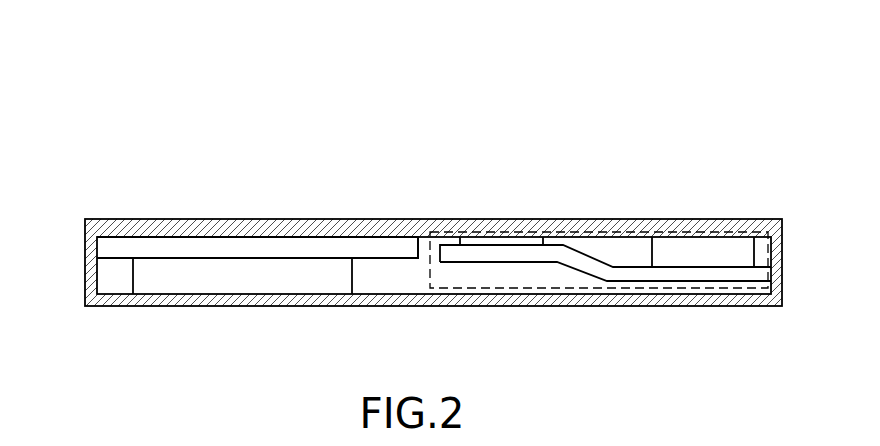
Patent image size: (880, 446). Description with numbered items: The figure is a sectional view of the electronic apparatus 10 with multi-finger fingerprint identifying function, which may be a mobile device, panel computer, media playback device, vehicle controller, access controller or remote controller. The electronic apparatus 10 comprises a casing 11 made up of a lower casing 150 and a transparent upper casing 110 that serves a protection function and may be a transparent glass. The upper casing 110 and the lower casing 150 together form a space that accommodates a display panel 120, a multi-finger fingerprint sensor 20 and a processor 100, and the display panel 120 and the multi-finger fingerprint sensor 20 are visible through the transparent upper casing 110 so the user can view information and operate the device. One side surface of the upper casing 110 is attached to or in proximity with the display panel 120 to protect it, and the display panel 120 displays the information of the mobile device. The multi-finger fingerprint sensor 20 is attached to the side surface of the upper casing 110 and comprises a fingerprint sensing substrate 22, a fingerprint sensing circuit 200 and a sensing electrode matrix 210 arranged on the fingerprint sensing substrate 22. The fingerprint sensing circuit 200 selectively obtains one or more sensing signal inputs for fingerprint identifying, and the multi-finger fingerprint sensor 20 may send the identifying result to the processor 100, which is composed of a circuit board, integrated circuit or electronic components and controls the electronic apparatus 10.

The electronic apparatus 10 is at (433, 80).
The casing 11 is at (347, 150).
The processor 100 is at (138, 279).
The upper casing 110 is at (352, 236).
The display panel 120 is at (110, 248).
The lower casing 150 is at (233, 300).
The multi-finger fingerprint sensor 20 is at (437, 276).
The sensing electrode matrix 210 is at (492, 242).
The fingerprint sensing substrate 22 is at (531, 258).
The fingerprint sensing circuit 200 is at (697, 252).